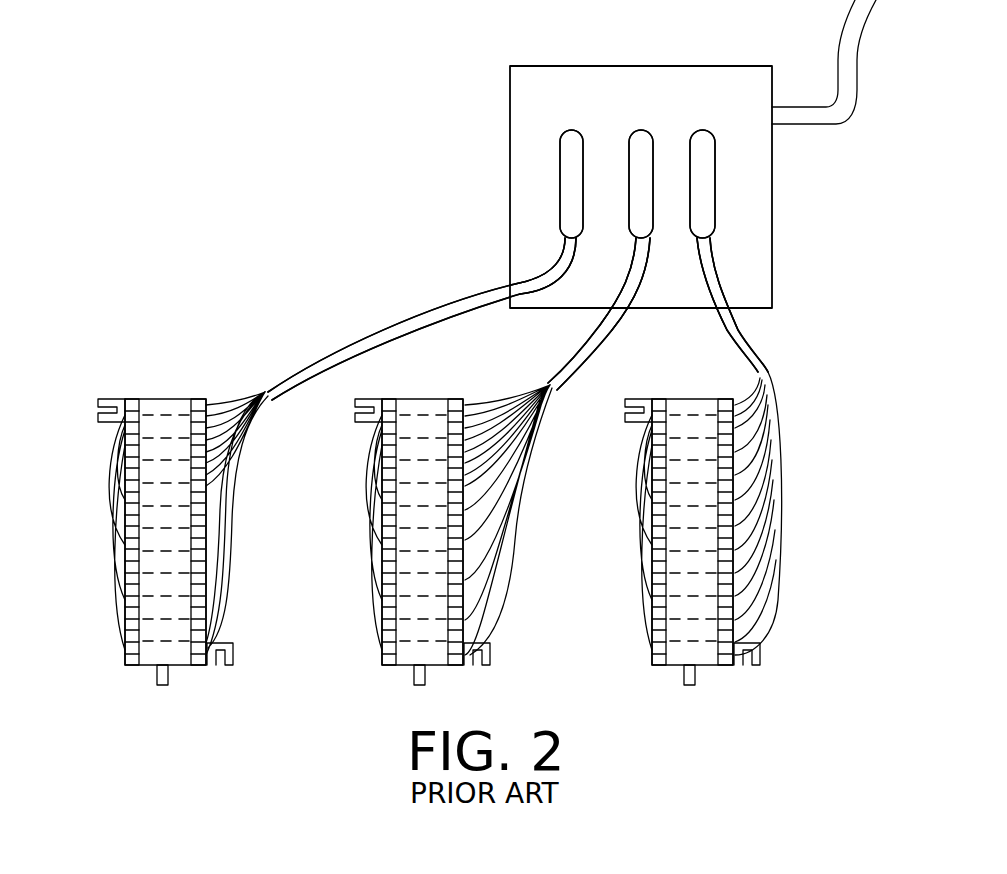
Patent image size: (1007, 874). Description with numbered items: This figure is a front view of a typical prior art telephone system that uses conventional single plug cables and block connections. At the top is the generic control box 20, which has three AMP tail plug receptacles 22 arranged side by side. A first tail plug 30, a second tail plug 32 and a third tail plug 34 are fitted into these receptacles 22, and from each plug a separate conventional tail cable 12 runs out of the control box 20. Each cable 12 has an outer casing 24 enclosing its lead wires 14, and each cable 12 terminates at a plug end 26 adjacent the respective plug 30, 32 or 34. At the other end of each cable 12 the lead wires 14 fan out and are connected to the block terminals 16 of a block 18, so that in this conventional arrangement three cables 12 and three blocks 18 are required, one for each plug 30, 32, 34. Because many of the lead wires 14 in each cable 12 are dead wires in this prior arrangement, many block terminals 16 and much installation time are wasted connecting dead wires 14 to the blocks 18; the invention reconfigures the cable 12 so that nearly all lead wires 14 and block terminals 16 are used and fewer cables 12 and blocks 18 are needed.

The tail cable 12 is at (440, 318).
The lead wires 14 is at (235, 392).
The block terminals 16 is at (125, 398).
The block 18 is at (148, 399).
The generic control box 20 is at (510, 140).
The tail plug receptacles 22 is at (560, 182).
The outer casing 24 is at (372, 338).
The plug end 26 is at (556, 262).
The first tail plug 30 is at (572, 130).
The second tail plug 32 is at (641, 130).
The third tail plug 34 is at (703, 130).